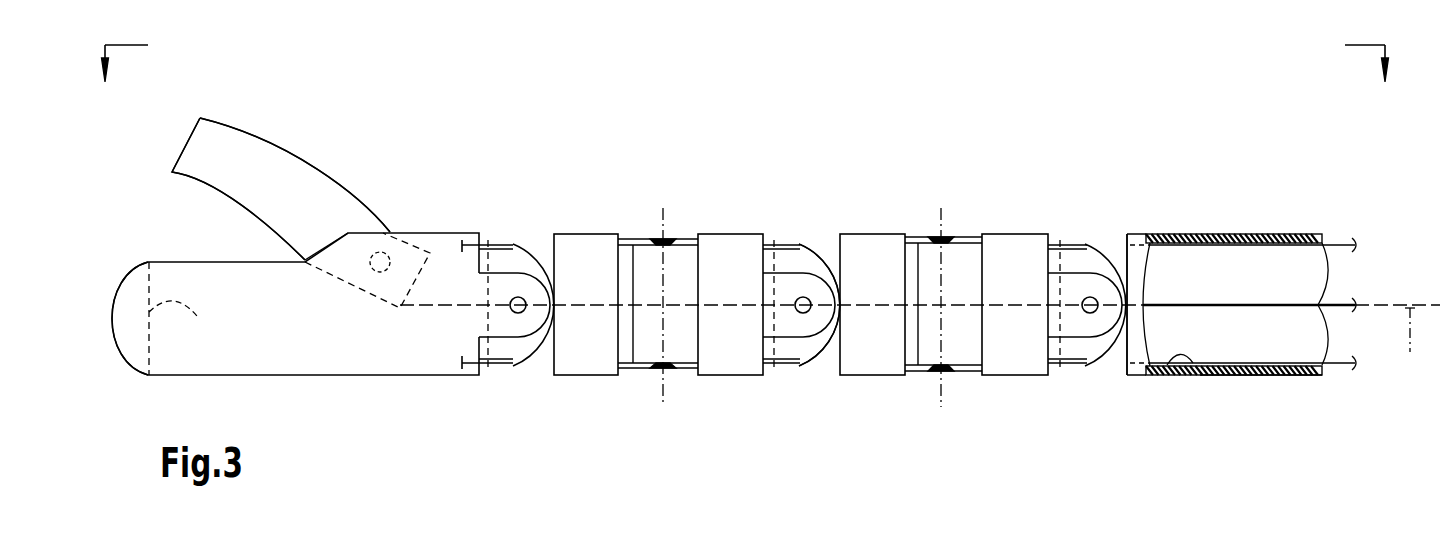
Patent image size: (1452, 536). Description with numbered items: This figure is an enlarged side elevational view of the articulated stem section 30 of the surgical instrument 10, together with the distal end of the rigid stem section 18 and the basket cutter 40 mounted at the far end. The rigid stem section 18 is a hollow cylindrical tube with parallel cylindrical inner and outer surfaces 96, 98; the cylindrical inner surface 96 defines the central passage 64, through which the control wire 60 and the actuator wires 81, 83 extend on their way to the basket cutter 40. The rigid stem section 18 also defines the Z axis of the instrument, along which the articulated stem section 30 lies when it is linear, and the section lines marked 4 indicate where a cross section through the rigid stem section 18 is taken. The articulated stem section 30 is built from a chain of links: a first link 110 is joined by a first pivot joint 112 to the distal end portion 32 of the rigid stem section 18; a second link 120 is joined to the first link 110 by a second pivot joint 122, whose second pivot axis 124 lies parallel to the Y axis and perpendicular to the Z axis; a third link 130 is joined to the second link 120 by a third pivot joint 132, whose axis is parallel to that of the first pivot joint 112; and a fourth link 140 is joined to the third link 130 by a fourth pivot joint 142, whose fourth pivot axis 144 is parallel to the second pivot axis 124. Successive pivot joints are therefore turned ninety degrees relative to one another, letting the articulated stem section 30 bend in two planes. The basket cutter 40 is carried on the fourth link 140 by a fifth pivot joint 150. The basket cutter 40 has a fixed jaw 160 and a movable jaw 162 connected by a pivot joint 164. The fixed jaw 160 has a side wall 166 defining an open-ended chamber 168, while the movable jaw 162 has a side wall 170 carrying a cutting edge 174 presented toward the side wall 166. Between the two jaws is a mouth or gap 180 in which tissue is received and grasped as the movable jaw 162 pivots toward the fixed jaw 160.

The section line 4- 4 is at (747, 77).
The surgical instrument 10 is at (1185, 212).
The rigid stem section 18 is at (1238, 226).
The articulated stem section 30 is at (827, 215).
The distal end portion of the rigid stem section 32 is at (1108, 243).
The basket cutter 40 is at (400, 153).
The control wire 60 is at (1335, 304).
The central passage 64 is at (1238, 351).
The actuator wire 81 is at (490, 272).
The actuator wire 83 is at (498, 377).
The cylindrical inner surface 96 is at (1203, 377).
The cylindrical outer surface 98 is at (1240, 377).
The first link 110 is at (1012, 237).
The first pivot joint 112 is at (1093, 312).
The second link 120 is at (877, 237).
The second pivot joint 122 is at (947, 230).
The second pivot axis 124 is at (941, 397).
The third link 130 is at (731, 240).
The third pivot joint 132 is at (808, 310).
The fourth link 140 is at (583, 240).
The fourth pivot joint 142 is at (668, 236).
The fourth pivot axis 144 is at (663, 403).
The fifth pivot joint 150 is at (519, 310).
The fixed jaw 160 is at (340, 383).
The movable jaw 162 is at (290, 148).
The pivot joint 164 is at (380, 252).
The side wall 166 is at (272, 342).
The open-ended chamber 168 is at (196, 318).
The side wall 170 is at (226, 153).
The cutting edge 174 is at (198, 180).
The mouth or gap 180 is at (190, 228).
The Z axis Z is at (1414, 344).